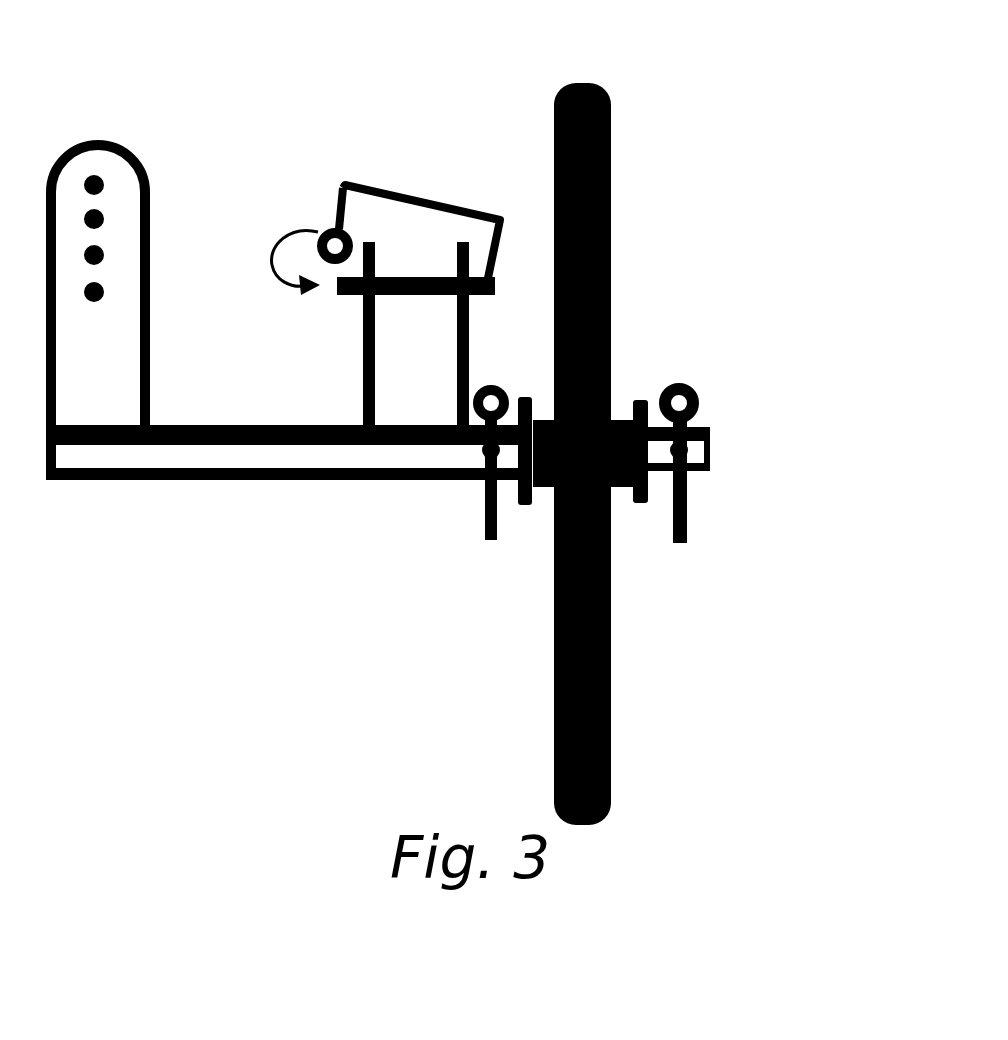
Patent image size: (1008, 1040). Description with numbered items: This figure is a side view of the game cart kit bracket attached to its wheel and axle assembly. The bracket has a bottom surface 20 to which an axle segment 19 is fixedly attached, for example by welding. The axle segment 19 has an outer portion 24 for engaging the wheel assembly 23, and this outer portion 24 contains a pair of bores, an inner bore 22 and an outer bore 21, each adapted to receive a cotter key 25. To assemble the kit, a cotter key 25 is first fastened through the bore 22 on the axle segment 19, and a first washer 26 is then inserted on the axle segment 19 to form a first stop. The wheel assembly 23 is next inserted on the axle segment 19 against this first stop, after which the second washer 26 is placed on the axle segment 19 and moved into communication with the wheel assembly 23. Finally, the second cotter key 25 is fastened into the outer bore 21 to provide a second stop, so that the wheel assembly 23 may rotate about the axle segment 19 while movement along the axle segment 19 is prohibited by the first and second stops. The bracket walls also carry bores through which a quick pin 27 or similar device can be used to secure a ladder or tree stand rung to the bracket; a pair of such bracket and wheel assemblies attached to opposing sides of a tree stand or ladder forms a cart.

The axle segment 19 is at (166, 463).
The bottom surface 20 is at (190, 427).
The outer bore 21 is at (706, 435).
The bore 22 is at (466, 470).
The wheel assembly 23 is at (614, 628).
The outer portion 24 is at (628, 487).
The cotter key 25 is at (490, 386).
The washer 26 is at (526, 507).
The quick pin 27 is at (428, 190).